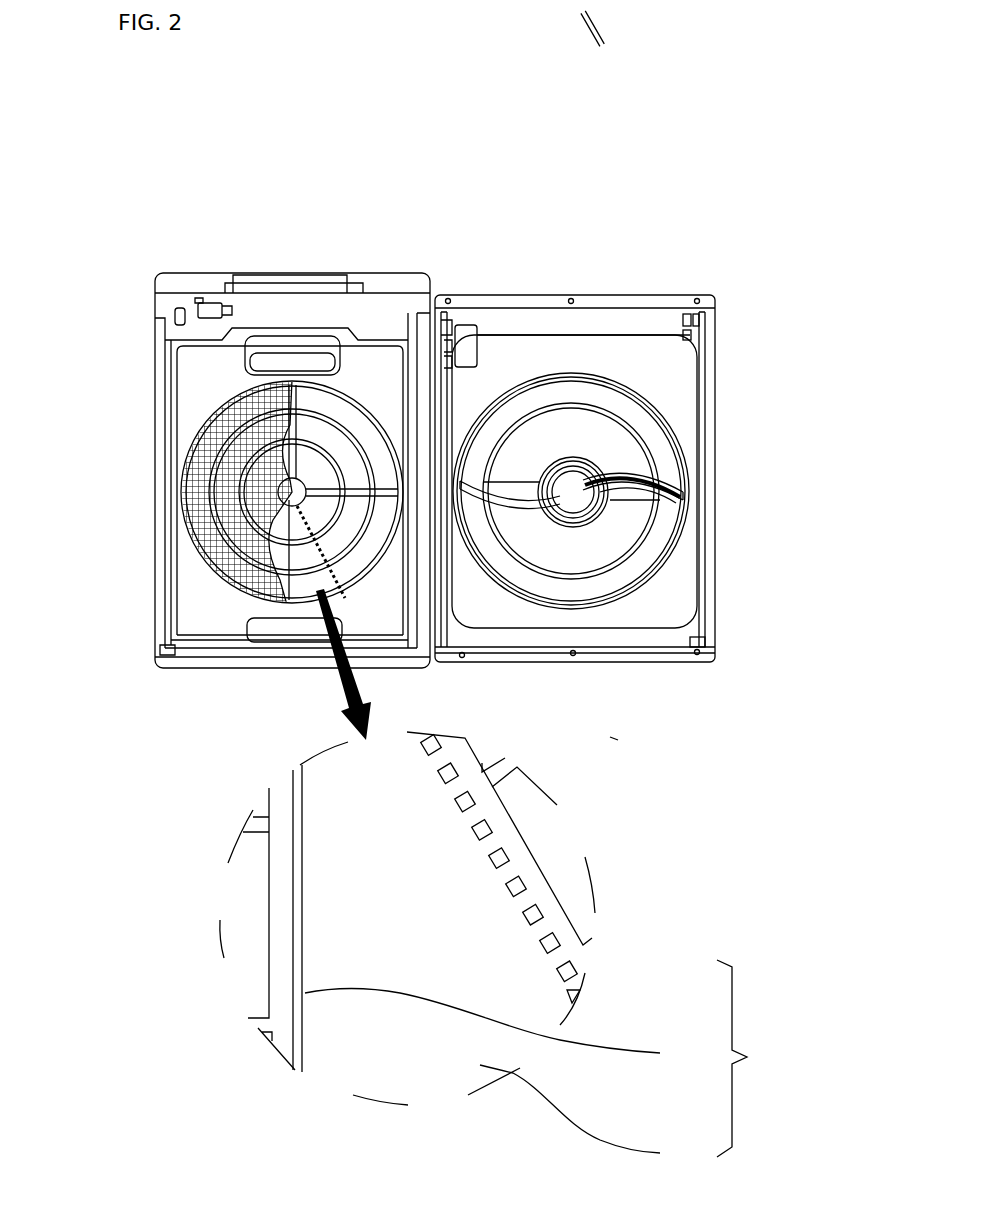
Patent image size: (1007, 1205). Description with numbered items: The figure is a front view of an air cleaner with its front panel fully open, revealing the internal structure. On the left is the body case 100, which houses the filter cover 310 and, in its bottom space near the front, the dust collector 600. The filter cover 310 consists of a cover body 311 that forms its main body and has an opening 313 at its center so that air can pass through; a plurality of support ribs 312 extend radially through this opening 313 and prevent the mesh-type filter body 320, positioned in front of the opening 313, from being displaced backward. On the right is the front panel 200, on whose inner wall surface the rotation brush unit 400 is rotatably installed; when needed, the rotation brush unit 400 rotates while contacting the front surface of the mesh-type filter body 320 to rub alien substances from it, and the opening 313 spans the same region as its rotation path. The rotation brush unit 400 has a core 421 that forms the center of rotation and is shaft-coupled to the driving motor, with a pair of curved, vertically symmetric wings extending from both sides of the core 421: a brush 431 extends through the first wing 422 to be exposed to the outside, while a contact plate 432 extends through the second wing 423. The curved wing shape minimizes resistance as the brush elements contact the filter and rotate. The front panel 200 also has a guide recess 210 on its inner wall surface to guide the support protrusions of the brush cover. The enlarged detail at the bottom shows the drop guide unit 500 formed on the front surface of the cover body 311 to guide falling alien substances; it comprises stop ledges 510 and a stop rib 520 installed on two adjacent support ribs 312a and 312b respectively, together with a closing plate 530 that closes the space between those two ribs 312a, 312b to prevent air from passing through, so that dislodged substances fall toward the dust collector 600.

The body case 100 is at (199, 268).
The front panel 200 is at (610, 262).
The guide recess 210 is at (543, 385).
The filter cover 310 is at (173, 418).
The cover body 311 is at (197, 367).
The support ribs 312 is at (372, 490).
The first adjacent support rib 312a is at (510, 835).
The second adjacent support rib 312b is at (282, 913).
The opening 313 is at (312, 395).
The mesh-type filter body 320 is at (168, 550).
The rotation brush unit 400 is at (632, 440).
The core 421 is at (573, 497).
The first wing 422 is at (678, 475).
The second wing 423 is at (490, 505).
The brush 431 is at (665, 503).
The contact plate 432 is at (523, 507).
The drop guide unit 500 is at (756, 1058).
The stop ledges 510 is at (570, 965).
The stop rib 520 is at (507, 1029).
The closing plate 530 is at (589, 1116).
The dust collector 600 is at (202, 682).